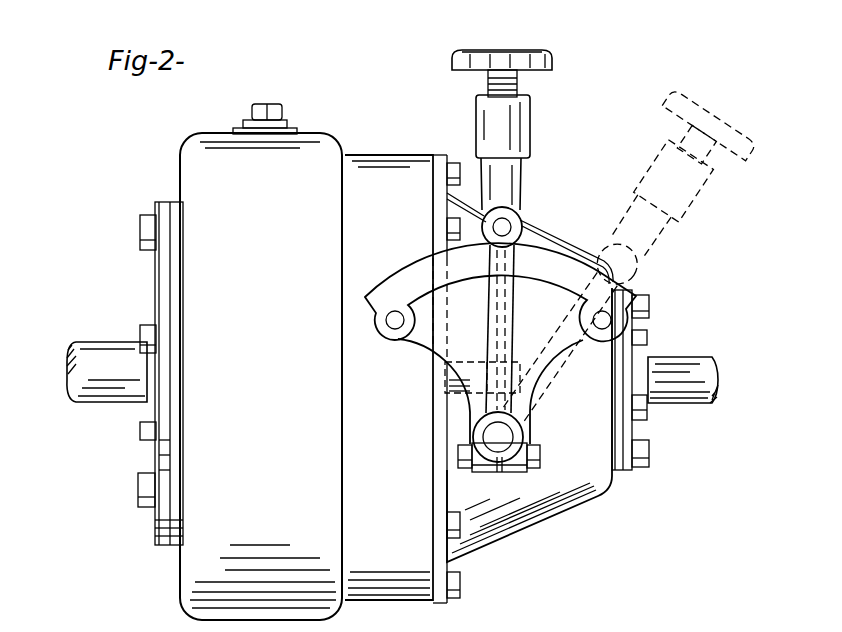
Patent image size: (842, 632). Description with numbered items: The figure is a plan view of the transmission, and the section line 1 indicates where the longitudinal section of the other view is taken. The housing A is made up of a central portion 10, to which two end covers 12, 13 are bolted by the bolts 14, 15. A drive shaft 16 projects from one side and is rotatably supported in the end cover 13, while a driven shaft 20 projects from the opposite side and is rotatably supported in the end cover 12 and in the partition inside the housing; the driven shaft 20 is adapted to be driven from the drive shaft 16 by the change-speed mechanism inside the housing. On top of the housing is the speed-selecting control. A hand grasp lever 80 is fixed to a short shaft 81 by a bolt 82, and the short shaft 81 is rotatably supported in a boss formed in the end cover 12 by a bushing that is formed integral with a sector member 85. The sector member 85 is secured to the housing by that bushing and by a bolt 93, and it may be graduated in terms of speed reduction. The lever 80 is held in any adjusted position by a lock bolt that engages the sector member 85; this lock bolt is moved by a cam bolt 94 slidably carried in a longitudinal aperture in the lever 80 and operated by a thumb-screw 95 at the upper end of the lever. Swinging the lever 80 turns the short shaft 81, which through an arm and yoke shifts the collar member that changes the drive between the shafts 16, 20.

The section line 1- 1 is at (66, 368).
The central portion 10 is at (317, 617).
The end cover 12 is at (156, 280).
The end cover 13 is at (567, 516).
The bolt 14 is at (141, 504).
The bolt 15 is at (459, 583).
The drive shaft 16 is at (693, 362).
The driven shaft 20 is at (92, 350).
The hand grasp lever 80 is at (533, 130).
The short shaft 81 is at (512, 227).
The bolt 82 is at (462, 456).
The sector member 85 is at (412, 276).
The bolt 93 is at (510, 370).
The cam bolt 94 is at (530, 412).
The thumb-screw 95 is at (453, 58).